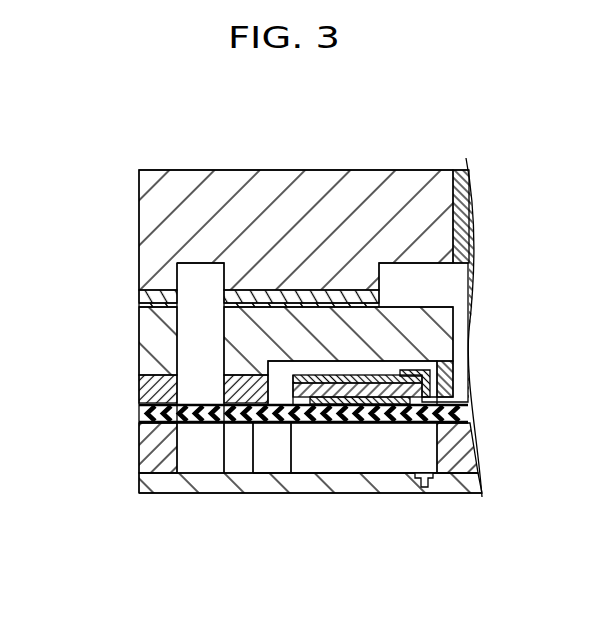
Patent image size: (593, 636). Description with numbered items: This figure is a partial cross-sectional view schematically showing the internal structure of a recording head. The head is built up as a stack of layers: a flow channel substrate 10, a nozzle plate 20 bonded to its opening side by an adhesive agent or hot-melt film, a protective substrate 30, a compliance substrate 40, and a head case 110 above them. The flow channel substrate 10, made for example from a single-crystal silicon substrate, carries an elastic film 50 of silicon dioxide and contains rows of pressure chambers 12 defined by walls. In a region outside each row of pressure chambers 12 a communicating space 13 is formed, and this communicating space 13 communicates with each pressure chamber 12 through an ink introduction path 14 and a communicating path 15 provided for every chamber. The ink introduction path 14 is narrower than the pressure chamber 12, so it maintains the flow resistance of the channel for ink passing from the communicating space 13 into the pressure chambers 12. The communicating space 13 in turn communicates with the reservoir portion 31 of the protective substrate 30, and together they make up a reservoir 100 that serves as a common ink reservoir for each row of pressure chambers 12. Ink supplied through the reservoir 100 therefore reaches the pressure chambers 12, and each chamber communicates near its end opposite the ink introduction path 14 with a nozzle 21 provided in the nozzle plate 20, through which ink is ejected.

The head case 110 is at (163, 183).
The protective substrate 30 is at (252, 325).
The compliance substrate 40 is at (133, 289).
The reservoir 100 is at (250, 424).
The reservoir portion 31 is at (198, 393).
The communicating space 13 is at (200, 435).
The elastic film 50 is at (470, 402).
The flow channel substrate 10 is at (163, 470).
The nozzle plate 20 is at (199, 480).
The communicating path 15 is at (237, 470).
The ink introduction path 14 is at (275, 463).
The pressure chamber 12 is at (337, 465).
The nozzle 21 is at (425, 488).